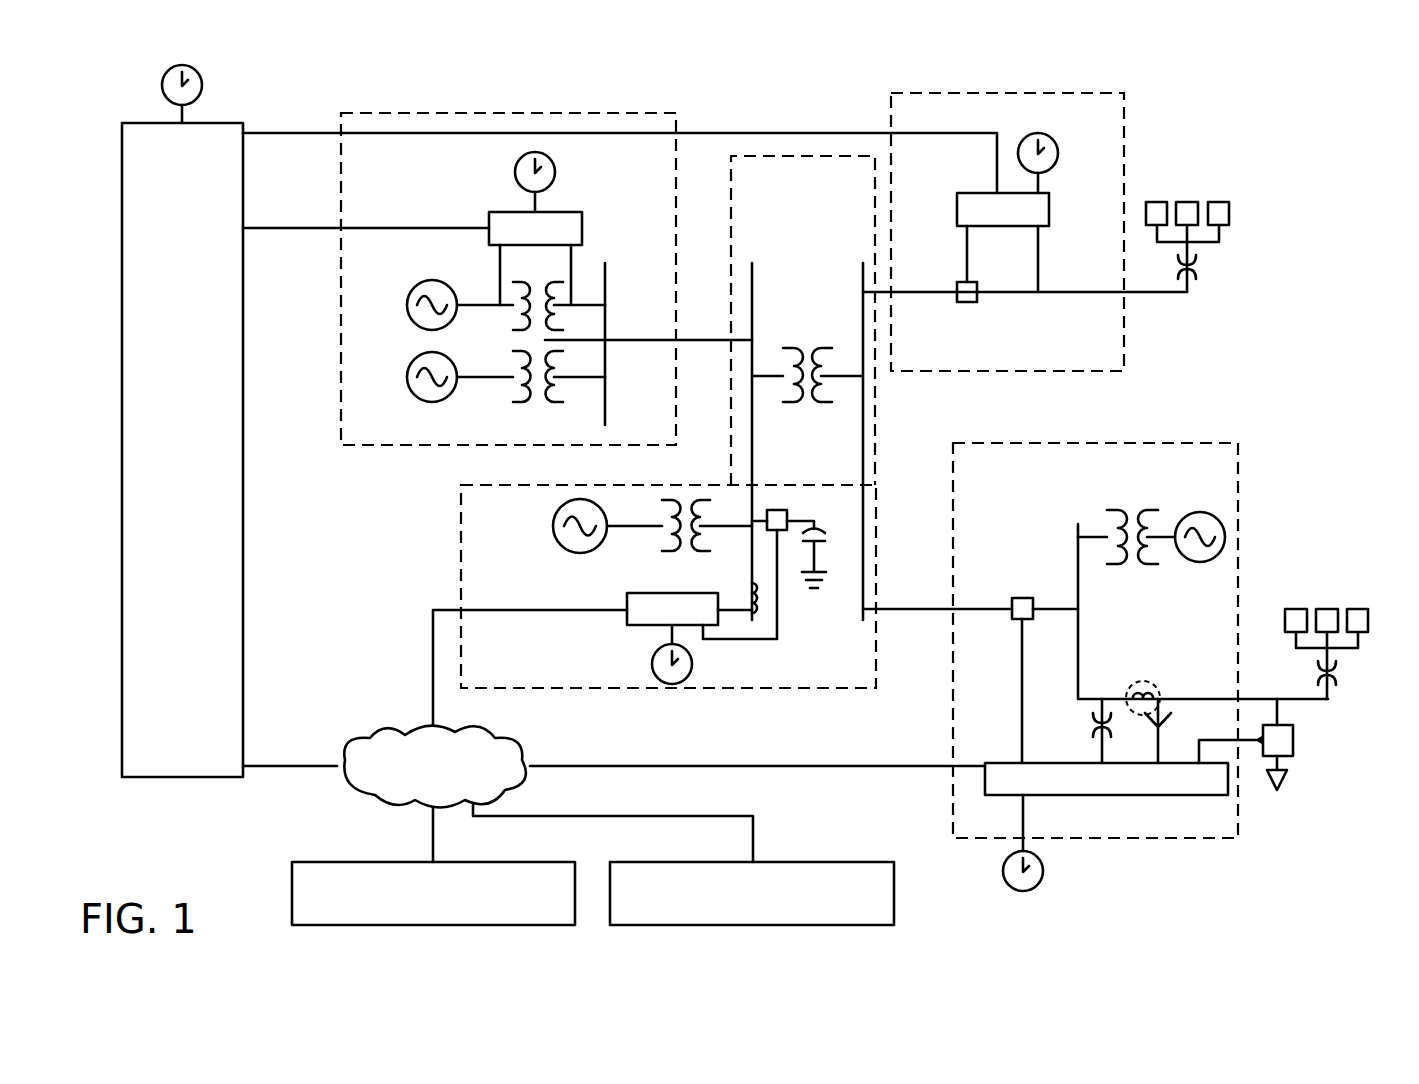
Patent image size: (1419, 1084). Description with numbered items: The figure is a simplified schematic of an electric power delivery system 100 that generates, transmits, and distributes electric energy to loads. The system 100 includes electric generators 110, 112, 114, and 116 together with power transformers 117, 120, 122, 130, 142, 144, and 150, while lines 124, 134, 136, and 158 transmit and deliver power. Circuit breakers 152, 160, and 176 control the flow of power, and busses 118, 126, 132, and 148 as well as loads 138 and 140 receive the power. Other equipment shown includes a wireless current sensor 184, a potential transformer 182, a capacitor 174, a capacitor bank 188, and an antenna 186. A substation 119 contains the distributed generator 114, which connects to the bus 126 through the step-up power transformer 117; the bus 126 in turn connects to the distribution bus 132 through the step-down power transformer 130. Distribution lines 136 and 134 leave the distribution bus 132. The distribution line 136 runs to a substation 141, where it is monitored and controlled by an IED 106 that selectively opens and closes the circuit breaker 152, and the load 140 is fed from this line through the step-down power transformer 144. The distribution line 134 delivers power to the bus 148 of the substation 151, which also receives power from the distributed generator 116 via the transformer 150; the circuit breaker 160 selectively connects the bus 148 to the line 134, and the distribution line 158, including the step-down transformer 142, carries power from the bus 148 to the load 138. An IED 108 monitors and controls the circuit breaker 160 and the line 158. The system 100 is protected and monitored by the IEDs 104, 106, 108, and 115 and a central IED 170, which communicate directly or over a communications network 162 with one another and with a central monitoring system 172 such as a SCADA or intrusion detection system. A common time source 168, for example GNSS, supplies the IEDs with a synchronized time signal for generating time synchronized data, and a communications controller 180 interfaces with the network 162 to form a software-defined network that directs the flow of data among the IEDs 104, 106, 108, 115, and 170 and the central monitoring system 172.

The electric power delivery system 100 is at (1240, 126).
The intelligent electronic device 104 is at (494, 212).
The intelligent electronic device 106 is at (963, 193).
The intelligent electronic device 108 is at (1100, 796).
The electric generator 110 is at (413, 290).
The electric generator 112 is at (414, 362).
The electric generator 114 is at (554, 527).
The intelligent electronic device 115 is at (678, 593).
The distributed generator 116 is at (1200, 562).
The power transformer 117 is at (666, 541).
The bus 118 is at (608, 415).
The substation 119 is at (536, 688).
The power transformer 120 is at (514, 330).
The power transformer 122 is at (531, 403).
The line 124 is at (690, 343).
The bus 126 is at (752, 405).
The power transformer 130 is at (808, 352).
The distribution bus 132 is at (861, 592).
The distribution line 134 is at (970, 612).
The distribution line 136 is at (952, 300).
The load 138 is at (1325, 608).
The load 140 is at (1230, 213).
The substation 141 is at (1096, 372).
The power transformer 142 is at (1340, 678).
The power transformer 144 is at (1200, 268).
The bus 148 is at (1076, 525).
The transformer 150 is at (1134, 512).
The substation 151 is at (1173, 838).
The circuit breaker 152 is at (977, 306).
The distribution line 158 is at (1310, 702).
The circuit breaker 160 is at (1020, 597).
The communications network 162 is at (396, 735).
The common time source 168 is at (202, 85).
The central IED 170 is at (243, 450).
The central monitoring system 172 is at (338, 862).
The capacitor 174 is at (818, 529).
The circuit breaker 176 is at (780, 508).
The communications controller 180 is at (653, 862).
The potential transformer 182 is at (1082, 723).
The wireless current sensor 184 is at (1130, 690).
The antenna 186 is at (1173, 725).
The capacitor bank 188 is at (1295, 740).